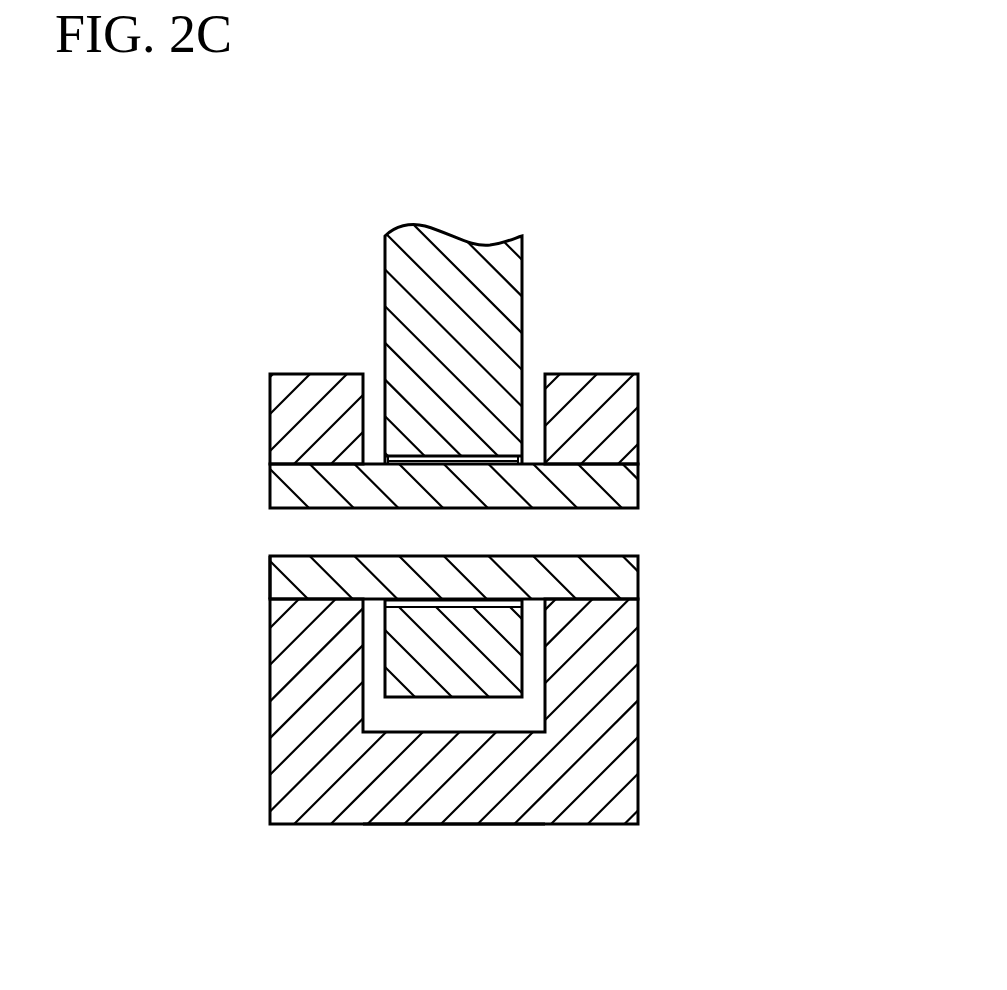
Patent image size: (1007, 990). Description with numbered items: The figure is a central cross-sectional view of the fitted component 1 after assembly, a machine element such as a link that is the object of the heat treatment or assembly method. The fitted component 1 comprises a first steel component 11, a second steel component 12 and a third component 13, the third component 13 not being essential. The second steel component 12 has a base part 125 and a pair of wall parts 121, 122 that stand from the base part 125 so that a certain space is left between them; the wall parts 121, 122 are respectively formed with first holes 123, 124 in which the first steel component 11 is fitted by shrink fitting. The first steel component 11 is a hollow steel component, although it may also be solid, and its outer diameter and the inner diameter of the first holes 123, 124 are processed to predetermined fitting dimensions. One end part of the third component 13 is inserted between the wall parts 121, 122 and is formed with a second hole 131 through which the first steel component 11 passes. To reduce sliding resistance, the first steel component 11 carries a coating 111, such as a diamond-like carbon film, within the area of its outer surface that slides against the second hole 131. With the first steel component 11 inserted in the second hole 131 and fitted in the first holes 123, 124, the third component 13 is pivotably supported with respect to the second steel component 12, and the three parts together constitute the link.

The fitted component 1 is at (762, 137).
The first steel component 11 is at (622, 488).
The second steel component 12 is at (639, 748).
The third component 13 is at (510, 273).
The coating 111 is at (663, 655).
The wall part 121 is at (297, 412).
The wall part 122 is at (622, 405).
The first hole 123 is at (312, 595).
The first hole 124 is at (598, 597).
The base part 125 is at (447, 802).
The second hole 131 is at (413, 457).